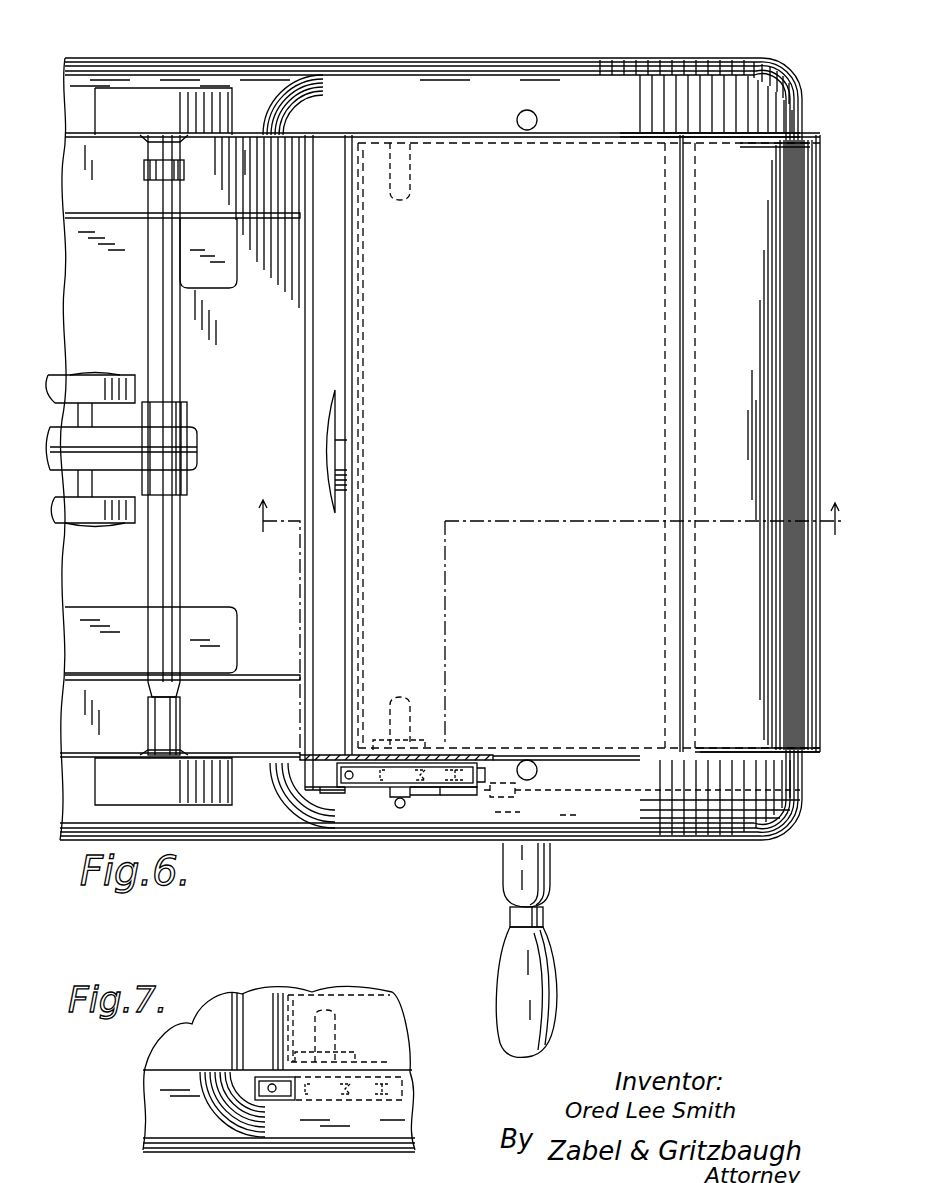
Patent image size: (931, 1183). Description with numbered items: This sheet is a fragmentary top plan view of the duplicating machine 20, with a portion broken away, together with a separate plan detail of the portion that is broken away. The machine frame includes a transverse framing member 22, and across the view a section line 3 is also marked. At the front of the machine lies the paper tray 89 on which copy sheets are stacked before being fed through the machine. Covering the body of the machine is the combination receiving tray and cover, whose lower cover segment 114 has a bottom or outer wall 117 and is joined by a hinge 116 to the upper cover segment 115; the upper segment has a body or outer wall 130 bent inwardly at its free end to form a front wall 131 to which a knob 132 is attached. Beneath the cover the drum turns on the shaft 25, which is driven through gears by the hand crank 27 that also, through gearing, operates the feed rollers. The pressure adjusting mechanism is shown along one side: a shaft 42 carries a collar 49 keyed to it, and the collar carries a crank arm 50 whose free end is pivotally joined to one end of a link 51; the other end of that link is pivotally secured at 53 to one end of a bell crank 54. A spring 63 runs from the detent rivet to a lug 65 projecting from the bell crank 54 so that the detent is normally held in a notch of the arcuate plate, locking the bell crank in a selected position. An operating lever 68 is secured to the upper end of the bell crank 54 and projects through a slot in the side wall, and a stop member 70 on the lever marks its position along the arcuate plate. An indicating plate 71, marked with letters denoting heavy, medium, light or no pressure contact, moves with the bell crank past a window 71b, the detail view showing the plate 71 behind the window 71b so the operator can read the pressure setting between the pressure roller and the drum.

In FIG. 6, the duplicating machine 20 is at (801, 73).
In FIG. 6, the transverse framing member 22 is at (822, 752).
In FIG. 6, the shaft 25 is at (535, 752).
In FIG. 6, the hand crank 27 is at (550, 890).
In FIG. 6, the section line 3 is at (537, 630).
In FIG. 6, the shaft 42 is at (320, 793).
In FIG. 6, the collar 49 is at (320, 775).
In FIG. 6, the crank arm 50 is at (333, 793).
In FIG. 6, the link 51 is at (468, 795).
In FIG. 6, the pivotal connection 53 is at (505, 796).
In FIG. 6, the bell crank 54 is at (520, 788).
In FIG. 6, the spring 63 is at (398, 808).
In FIG. 6, the lug 65 is at (413, 797).
In FIG. 6, the operating lever 68 is at (392, 700).
In FIG. 7, the operating lever 68 is at (330, 1022).
In FIG. 6, the stop member 70 is at (422, 742).
In FIG. 7, the stop member 70 is at (355, 1050).
In FIG. 6, the indicating plate 71 is at (345, 793).
In FIG. 7, the indicating plate 71 is at (365, 1095).
In FIG. 7, the window 71b is at (272, 1096).
In FIG. 6, the paper tray 89 is at (240, 586).
In FIG. 6, the lower cover segment 114 is at (716, 336).
In FIG. 6, the upper cover segment 115 is at (558, 330).
In FIG. 7, the upper cover segment 115 is at (312, 993).
In FIG. 6, the hinge 116 is at (668, 632).
In FIG. 6, the bottom or outer wall 117 is at (745, 165).
In FIG. 6, the body or outer wall 130 is at (620, 165).
In FIG. 6, the front wall 131 is at (352, 334).
In FIG. 6, the knob 132 is at (345, 437).